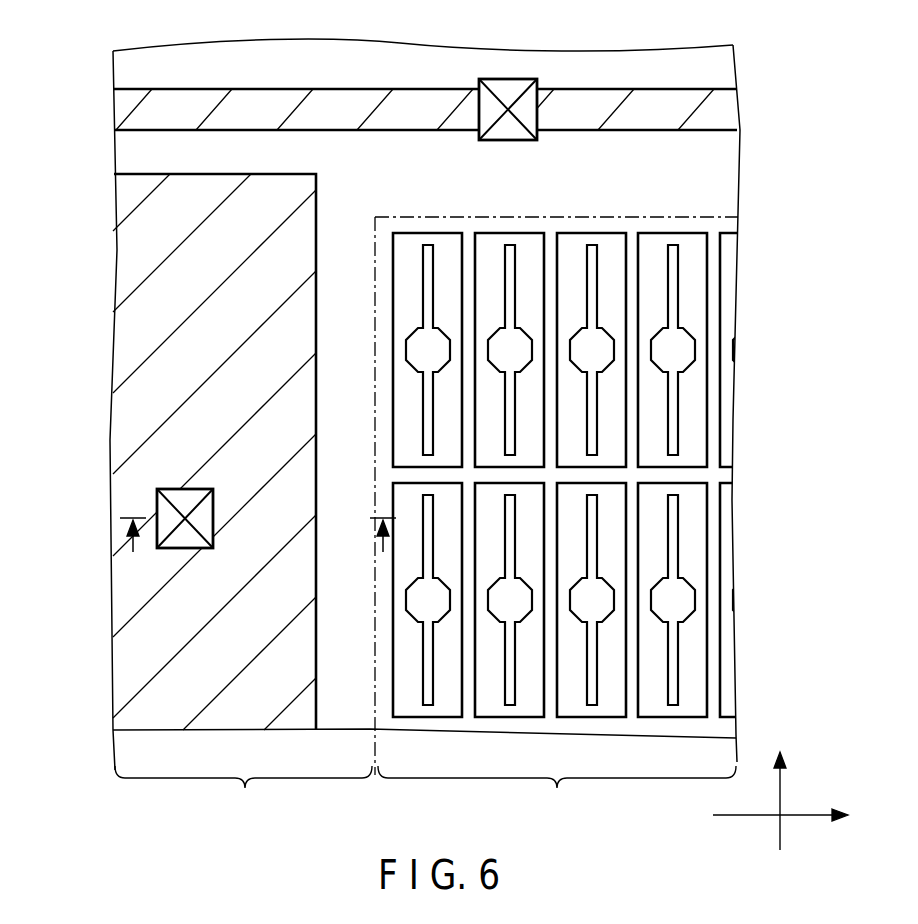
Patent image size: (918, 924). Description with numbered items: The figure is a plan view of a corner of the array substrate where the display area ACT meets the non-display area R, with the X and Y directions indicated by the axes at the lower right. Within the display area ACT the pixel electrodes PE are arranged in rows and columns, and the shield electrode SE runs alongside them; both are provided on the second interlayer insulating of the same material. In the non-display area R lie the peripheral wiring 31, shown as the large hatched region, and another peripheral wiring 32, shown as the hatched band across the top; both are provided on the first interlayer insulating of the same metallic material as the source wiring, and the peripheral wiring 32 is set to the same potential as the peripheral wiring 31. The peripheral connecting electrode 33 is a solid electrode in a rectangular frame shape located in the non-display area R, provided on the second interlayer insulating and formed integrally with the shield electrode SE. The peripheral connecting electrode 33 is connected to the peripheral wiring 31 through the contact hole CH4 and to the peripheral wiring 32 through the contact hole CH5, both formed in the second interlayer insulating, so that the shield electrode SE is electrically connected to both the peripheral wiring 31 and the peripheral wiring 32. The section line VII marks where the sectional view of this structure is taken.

The peripheral wiring 31 is at (128, 174).
The peripheral wiring 32 is at (128, 89).
The peripheral connecting electrode 33 is at (719, 156).
The contact hole CH4 is at (167, 489).
The contact hole CH5 is at (506, 79).
The pixel electrode PE is at (592, 272).
The shield electrode SE is at (720, 379).
The line VII- VII is at (130, 540).
The non-display area R is at (243, 794).
The display area ACT is at (557, 793).
The X direction X is at (792, 817).
The Y direction Y is at (779, 788).